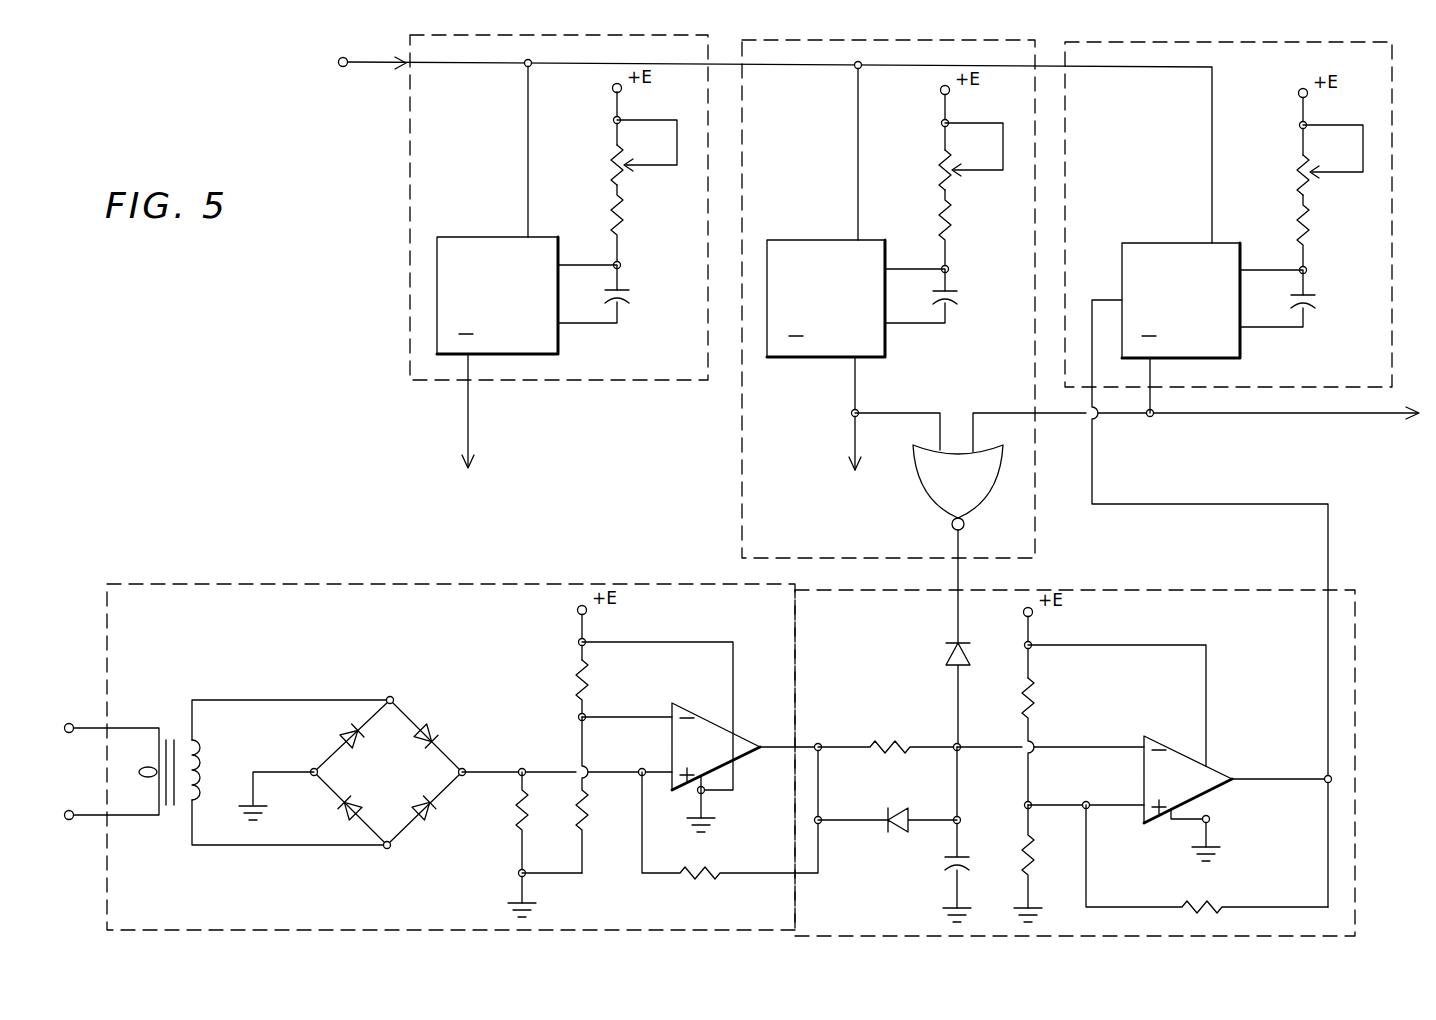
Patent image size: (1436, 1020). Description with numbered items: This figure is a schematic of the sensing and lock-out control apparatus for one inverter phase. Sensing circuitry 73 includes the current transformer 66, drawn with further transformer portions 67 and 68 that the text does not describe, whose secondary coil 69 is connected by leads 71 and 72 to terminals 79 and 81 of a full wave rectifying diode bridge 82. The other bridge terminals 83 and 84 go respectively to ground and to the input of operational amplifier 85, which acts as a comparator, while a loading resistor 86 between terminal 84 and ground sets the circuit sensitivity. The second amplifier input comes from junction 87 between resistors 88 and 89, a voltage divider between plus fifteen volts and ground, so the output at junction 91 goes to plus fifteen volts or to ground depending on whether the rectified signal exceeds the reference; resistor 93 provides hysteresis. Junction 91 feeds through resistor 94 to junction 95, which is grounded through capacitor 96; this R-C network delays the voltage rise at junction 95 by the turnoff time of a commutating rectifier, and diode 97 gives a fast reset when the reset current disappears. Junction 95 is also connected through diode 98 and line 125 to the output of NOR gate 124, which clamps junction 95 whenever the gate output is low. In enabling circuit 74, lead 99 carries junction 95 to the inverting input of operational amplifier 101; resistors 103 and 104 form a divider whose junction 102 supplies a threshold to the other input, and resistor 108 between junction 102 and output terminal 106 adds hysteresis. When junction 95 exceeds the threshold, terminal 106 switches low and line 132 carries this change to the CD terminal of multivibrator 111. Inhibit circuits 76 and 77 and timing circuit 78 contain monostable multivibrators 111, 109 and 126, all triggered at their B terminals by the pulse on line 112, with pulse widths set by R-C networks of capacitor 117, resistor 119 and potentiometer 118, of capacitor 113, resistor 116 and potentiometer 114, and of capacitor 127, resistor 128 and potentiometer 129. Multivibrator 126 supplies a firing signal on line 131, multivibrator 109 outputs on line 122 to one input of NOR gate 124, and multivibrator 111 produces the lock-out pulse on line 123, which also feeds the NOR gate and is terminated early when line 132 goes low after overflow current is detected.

The current transformer 66 is at (156, 784).
The primary winding 67 is at (145, 767).
The transformer core 68 is at (172, 815).
The secondary coil 69 is at (203, 765).
The lead 71 is at (232, 700).
The lead 72 is at (250, 845).
The sensing circuitry 73 is at (446, 580).
The enabling circuit 74 is at (1076, 585).
The inhibit circuit 76 is at (1248, 32).
The inhibit circuit 77 is at (910, 32).
The timing circuit 78 is at (570, 30).
The terminal 79 is at (393, 698).
The terminal 81 is at (387, 849).
The full wave rectifying diode bridge 82 is at (402, 784).
The terminal 83 is at (311, 769).
The terminal 84 is at (467, 768).
The operational amplifier 85 is at (718, 694).
The loading resistor 86 is at (515, 803).
The junction 87 is at (589, 715).
The resistor 88 is at (576, 685).
The resistor 89 is at (589, 808).
The junction 91 is at (821, 743).
The resistor 93 is at (708, 876).
The resistor 94 is at (905, 743).
The junction 95 is at (953, 752).
The capacitor 96 is at (966, 852).
The diode 97 is at (894, 832).
The diode 98 is at (946, 655).
The lead 99 is at (985, 743).
The operational amplifier 101 is at (1153, 736).
The junction 102 is at (1034, 802).
The resistor 103 is at (1040, 704).
The resistor 104 is at (1040, 862).
The amplifier output terminal 106 is at (1322, 774).
The resistor 108 is at (1225, 905).
The monostable multivibrator 109 is at (820, 366).
The monostable multivibrator 111 is at (1135, 243).
The line 112 is at (366, 74).
The capacitor 113 is at (952, 303).
The potentiometer 114 is at (935, 168).
The resistor 116 is at (935, 215).
The capacitor 117 is at (1312, 308).
The potentiometer 118 is at (1295, 173).
The resistor 119 is at (1295, 220).
The line 122 is at (903, 412).
The line 123 is at (1070, 418).
The NOR gate 124 is at (936, 498).
The line 125 is at (955, 612).
The monostable multivibrator 126 is at (470, 237).
The capacitor 127 is at (628, 302).
The resistor 128 is at (610, 217).
The potentiometer 129 is at (610, 172).
The line 131 is at (470, 416).
The line 132 is at (1322, 612).